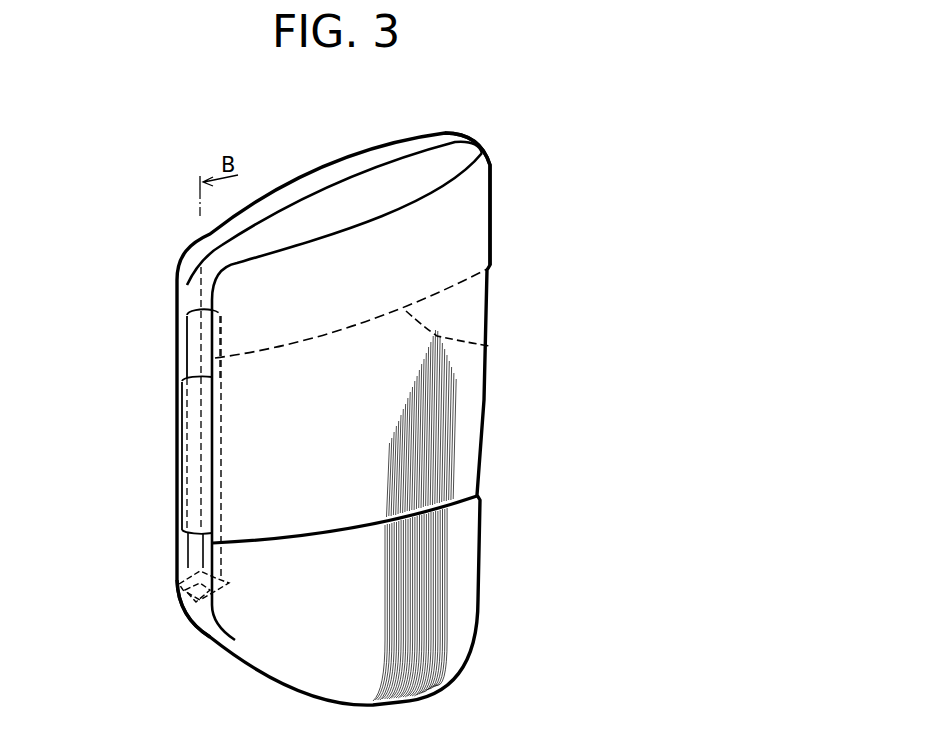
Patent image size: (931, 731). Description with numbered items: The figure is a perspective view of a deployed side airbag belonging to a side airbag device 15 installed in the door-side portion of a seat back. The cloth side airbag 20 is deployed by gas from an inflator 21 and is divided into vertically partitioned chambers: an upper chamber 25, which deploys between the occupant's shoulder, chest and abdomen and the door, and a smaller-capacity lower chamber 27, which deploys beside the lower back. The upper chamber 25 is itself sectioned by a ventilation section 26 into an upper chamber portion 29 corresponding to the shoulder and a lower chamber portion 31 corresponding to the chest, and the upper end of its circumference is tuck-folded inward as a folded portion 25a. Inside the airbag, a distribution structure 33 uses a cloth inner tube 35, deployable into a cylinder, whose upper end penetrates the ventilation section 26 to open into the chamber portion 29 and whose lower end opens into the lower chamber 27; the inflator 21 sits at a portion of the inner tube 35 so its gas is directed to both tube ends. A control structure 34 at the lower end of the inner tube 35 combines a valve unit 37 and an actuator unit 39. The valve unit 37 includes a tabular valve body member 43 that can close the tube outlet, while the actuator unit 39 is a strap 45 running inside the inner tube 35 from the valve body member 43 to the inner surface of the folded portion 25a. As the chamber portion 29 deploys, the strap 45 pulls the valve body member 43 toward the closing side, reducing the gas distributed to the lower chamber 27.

The side airbag device 15 is at (115, 321).
The side airbag 20 is at (496, 436).
The inflator 21 is at (183, 420).
The upper chamber 25 is at (568, 206).
The folded portion 25a is at (338, 172).
The ventilation section 26 is at (490, 346).
The lower chamber 27 is at (455, 571).
The chamber portion 29 is at (473, 223).
The chamber portion 31 is at (470, 318).
The distribution structure 33 is at (187, 340).
The control structure 34 is at (307, 548).
The inner tube 35 is at (188, 540).
The valve unit 37 is at (218, 592).
The actuator unit 39 is at (205, 492).
The valve body member 43 is at (200, 598).
The strap 45 is at (215, 405).